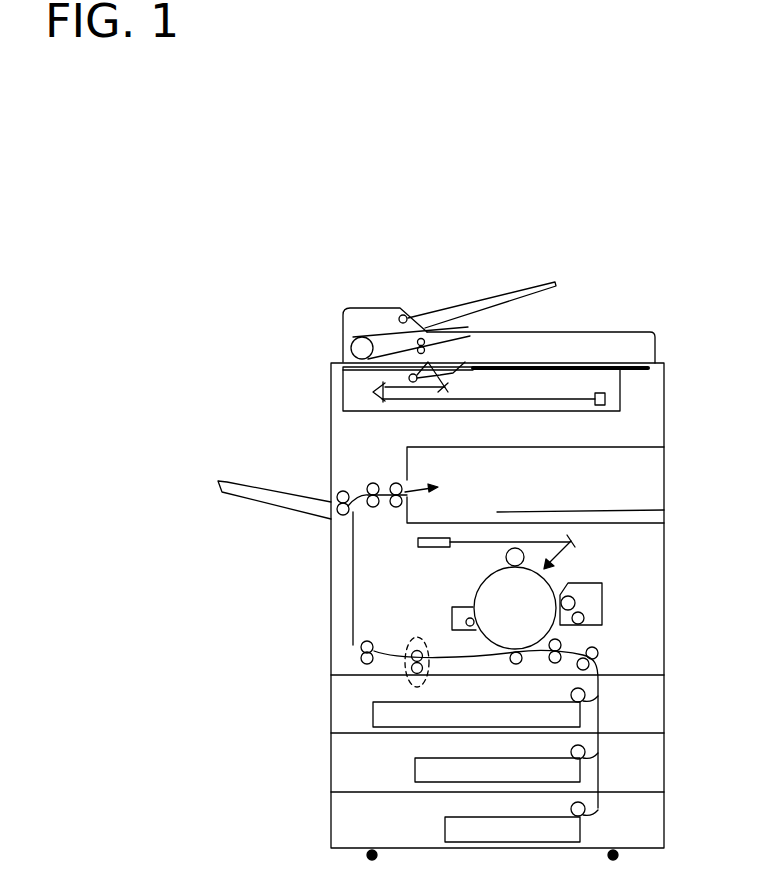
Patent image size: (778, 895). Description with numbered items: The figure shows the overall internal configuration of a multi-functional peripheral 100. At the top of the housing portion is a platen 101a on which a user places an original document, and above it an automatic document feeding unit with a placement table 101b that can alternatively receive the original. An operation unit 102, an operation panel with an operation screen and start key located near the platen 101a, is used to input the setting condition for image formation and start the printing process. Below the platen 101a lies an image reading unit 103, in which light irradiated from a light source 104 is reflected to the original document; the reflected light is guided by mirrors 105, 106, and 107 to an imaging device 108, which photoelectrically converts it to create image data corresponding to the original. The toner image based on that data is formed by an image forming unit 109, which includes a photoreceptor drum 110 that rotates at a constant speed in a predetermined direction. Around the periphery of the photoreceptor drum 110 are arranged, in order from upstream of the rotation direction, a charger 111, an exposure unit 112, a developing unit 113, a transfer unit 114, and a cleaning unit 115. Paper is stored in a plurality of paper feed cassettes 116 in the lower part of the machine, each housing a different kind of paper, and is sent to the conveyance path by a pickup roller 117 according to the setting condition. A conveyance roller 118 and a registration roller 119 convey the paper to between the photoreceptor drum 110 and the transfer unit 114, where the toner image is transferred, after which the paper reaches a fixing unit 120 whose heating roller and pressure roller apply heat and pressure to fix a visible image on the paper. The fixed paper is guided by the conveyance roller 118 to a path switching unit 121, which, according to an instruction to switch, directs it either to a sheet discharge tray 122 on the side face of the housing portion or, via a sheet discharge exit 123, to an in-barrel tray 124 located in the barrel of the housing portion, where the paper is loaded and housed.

The multi-functional peripheral 100 is at (500, 280).
The platen 101a is at (563, 365).
The placement table 101b is at (356, 327).
The operation unit 102 is at (627, 366).
The image reading unit 103 is at (327, 412).
The light source 104 is at (465, 362).
The mirror 105 is at (450, 387).
The mirror 106 is at (383, 397).
The mirror 107 is at (376, 399).
The imaging device 108 is at (603, 393).
The image forming unit 109 is at (322, 658).
The photoreceptor drum 110 is at (488, 593).
The charger 111 is at (506, 556).
The exposure unit 112 is at (418, 542).
The developing unit 113 is at (605, 583).
The transfer unit 114 is at (512, 660).
The cleaning unit 115 is at (452, 608).
The paper feed cassettes 116 is at (373, 716).
The pickup roller 117 is at (585, 695).
The conveyance roller 118 is at (362, 646).
The registration roller 119 is at (552, 661).
The fixing unit 120 is at (405, 665).
The path switching unit 121 is at (350, 508).
The sheet discharge tray 122 is at (218, 481).
The sheet discharge exit 123 is at (408, 480).
The in-barrel tray 124 is at (447, 523).